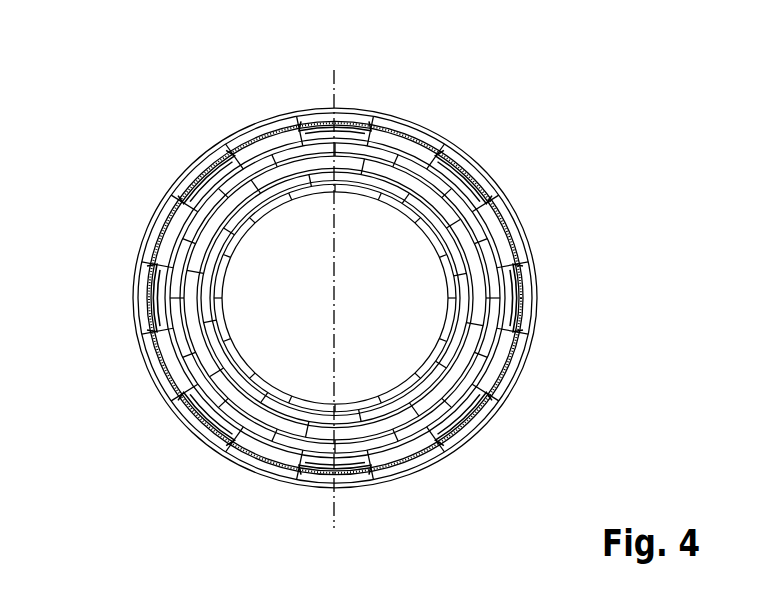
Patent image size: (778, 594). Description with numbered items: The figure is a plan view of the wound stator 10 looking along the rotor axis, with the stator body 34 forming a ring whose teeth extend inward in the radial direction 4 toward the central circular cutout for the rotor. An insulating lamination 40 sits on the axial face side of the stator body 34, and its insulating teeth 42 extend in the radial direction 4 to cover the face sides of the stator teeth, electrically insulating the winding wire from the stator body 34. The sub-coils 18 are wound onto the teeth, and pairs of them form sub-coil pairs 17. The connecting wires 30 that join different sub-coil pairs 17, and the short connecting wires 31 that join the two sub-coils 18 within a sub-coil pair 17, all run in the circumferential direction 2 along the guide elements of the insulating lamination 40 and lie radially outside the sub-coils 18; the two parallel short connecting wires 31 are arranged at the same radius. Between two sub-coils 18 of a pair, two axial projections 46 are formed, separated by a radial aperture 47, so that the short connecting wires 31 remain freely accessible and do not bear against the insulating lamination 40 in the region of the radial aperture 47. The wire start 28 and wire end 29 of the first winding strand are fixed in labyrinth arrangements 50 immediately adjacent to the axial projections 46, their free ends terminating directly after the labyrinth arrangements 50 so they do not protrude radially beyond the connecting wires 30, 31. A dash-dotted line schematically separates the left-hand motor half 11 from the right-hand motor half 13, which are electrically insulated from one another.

The supporting ring 10 is at (548, 102).
The motor half 11 is at (148, 203).
The right-hand motor half 13 is at (526, 201).
The sub-coil pair 17 is at (470, 337).
The sub-coil 18 is at (472, 262).
The wire start 28 is at (385, 128).
The wire end 29 is at (468, 180).
The connecting wire 30 is at (190, 178).
The short connecting wire 31 is at (238, 145).
The stator body 34 is at (538, 296).
The insulating lamination 40 is at (343, 128).
The insulating tooth 42 is at (258, 222).
The axial projection 46 is at (204, 420).
The radial aperture 47 is at (430, 442).
The labyrinth arrangement 50 is at (241, 475).
The radial direction 4 is at (252, 293).
The circumferential direction 2 is at (555, 380).